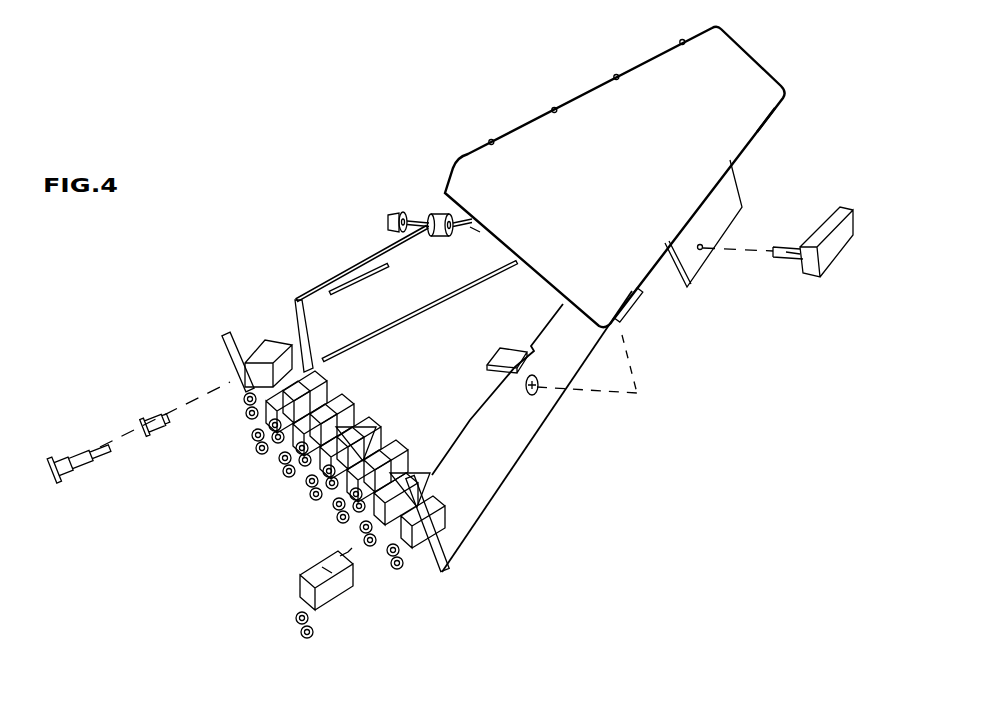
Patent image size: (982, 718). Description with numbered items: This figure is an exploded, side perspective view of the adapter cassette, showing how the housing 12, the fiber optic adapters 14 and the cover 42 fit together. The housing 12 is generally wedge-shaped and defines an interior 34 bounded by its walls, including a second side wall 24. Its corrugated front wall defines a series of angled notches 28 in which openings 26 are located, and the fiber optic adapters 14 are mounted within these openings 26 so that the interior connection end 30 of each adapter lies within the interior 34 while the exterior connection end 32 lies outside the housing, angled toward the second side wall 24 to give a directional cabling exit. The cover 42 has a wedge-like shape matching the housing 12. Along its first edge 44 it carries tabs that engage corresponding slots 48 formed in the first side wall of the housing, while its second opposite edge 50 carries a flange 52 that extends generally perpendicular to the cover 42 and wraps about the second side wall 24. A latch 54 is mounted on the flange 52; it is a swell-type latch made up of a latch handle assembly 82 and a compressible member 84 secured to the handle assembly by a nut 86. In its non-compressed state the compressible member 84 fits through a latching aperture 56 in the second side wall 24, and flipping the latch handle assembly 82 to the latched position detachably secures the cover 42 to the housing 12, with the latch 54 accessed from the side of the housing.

The housing 12 is at (540, 477).
The fiber optic adapter 14 is at (340, 608).
The second side wall 24 is at (477, 487).
The opening 26 is at (340, 518).
The angled notch 28 is at (297, 353).
The interior connection end 30 is at (347, 390).
The exterior connection end 32 is at (283, 450).
The interior 34 is at (462, 338).
The cover 42 is at (527, 153).
The first edge 44 is at (585, 92).
The slot 48 is at (358, 277).
The second opposite edge 50 is at (758, 129).
The flange 52 is at (730, 198).
The latch 54 is at (800, 287).
The latching aperture 56 is at (538, 378).
The latch handle assembly 82 is at (827, 257).
The compressible member 84 is at (438, 212).
The nut 86 is at (395, 212).